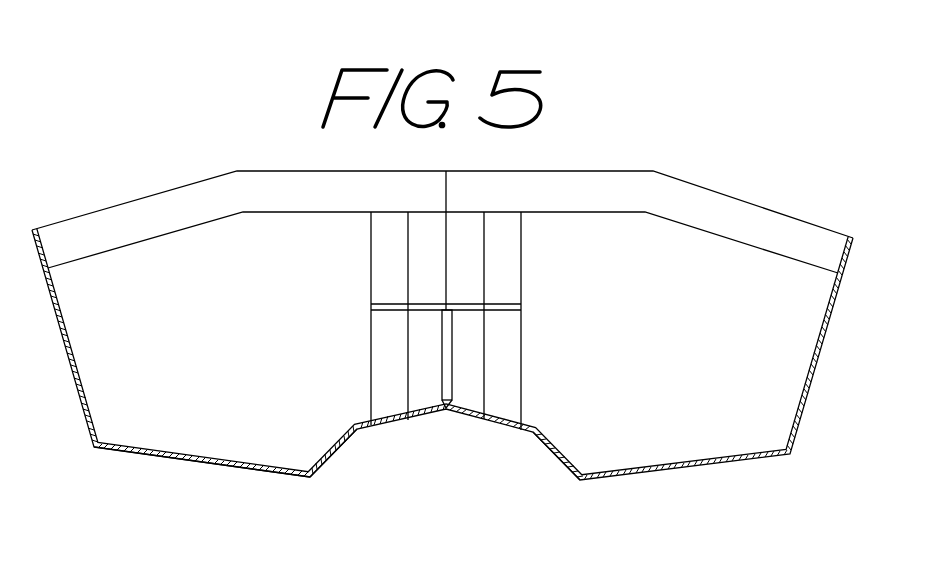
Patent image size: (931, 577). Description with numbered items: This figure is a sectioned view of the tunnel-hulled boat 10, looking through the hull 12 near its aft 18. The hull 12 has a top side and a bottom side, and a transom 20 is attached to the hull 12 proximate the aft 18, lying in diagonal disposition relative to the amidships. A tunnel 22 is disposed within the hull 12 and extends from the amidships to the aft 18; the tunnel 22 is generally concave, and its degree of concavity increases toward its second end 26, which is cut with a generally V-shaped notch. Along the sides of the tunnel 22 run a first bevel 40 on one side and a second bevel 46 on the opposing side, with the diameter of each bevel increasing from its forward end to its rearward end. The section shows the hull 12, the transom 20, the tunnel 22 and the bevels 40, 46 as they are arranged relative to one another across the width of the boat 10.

The tunnel-hulled boat 10 is at (158, 149).
The hull 12 is at (709, 467).
The aft 18 is at (250, 518).
The transom 20 is at (603, 185).
The tunnel 22 is at (491, 467).
The second end 26 is at (446, 413).
The first bevel 40 is at (340, 462).
The second bevel 46 is at (555, 460).